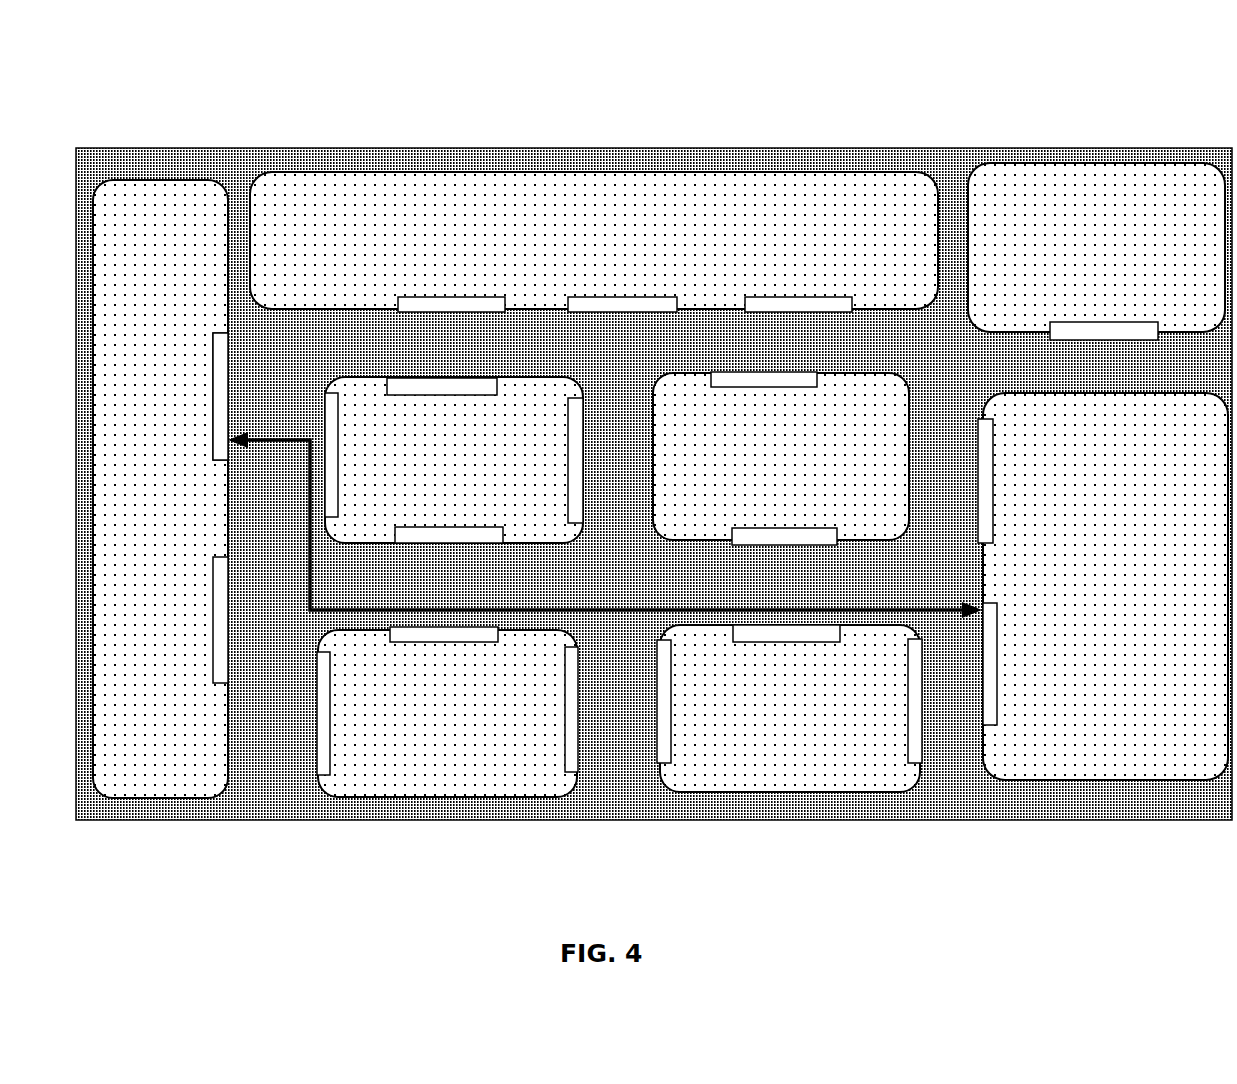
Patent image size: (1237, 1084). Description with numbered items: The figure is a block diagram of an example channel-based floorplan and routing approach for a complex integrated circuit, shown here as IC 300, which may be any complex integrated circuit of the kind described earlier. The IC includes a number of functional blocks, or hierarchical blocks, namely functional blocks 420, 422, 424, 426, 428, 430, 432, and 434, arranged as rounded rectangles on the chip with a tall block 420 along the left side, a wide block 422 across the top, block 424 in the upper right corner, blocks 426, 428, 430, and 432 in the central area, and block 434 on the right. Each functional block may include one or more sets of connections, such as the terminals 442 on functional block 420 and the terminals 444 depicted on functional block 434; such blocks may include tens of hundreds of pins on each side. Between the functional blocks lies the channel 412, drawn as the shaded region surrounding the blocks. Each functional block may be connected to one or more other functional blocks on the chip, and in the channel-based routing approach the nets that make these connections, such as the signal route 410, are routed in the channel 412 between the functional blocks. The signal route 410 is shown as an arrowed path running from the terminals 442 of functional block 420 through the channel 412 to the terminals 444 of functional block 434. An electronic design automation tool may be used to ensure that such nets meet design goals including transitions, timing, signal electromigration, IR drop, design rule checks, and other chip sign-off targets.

The IC 300 is at (529, 82).
The signal route 410 is at (605, 525).
The channel 412 is at (654, 484).
The functional block 420 is at (160, 489).
The functional block 422 is at (594, 242).
The functional block 424 is at (1096, 251).
The functional block 426 is at (454, 460).
The functional block 428 is at (781, 458).
The functional block 430 is at (447, 712).
The functional block 432 is at (789, 708).
The functional block 434 is at (1103, 586).
The terminals 442 is at (205, 425).
The terminals 444 is at (1008, 633).